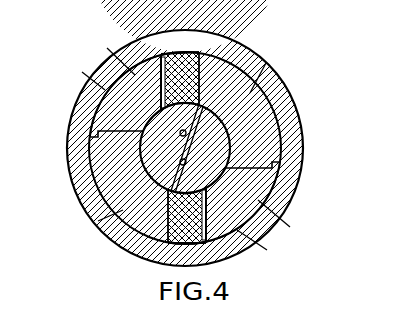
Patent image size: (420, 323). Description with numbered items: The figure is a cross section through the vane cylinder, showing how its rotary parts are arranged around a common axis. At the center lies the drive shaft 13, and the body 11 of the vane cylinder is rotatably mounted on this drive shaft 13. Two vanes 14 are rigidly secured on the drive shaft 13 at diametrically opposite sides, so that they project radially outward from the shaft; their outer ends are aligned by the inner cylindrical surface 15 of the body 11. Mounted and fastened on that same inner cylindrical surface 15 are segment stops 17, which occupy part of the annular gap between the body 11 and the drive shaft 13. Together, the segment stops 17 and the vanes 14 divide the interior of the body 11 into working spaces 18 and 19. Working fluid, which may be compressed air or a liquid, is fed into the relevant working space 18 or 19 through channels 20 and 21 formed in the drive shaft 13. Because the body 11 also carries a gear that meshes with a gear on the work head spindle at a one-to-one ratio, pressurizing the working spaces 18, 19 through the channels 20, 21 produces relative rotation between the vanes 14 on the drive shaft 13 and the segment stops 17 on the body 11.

The body of the vane cylinder 11 is at (295, 133).
The drive shaft 13 is at (142, 150).
The vanes 14 is at (168, 231).
The inner cylindrical surface 15 is at (97, 170).
The segment stops 17 is at (270, 185).
The working space 18 is at (212, 250).
The working space 19 is at (93, 218).
The channel 20 is at (219, 118).
The channel 21 is at (172, 160).